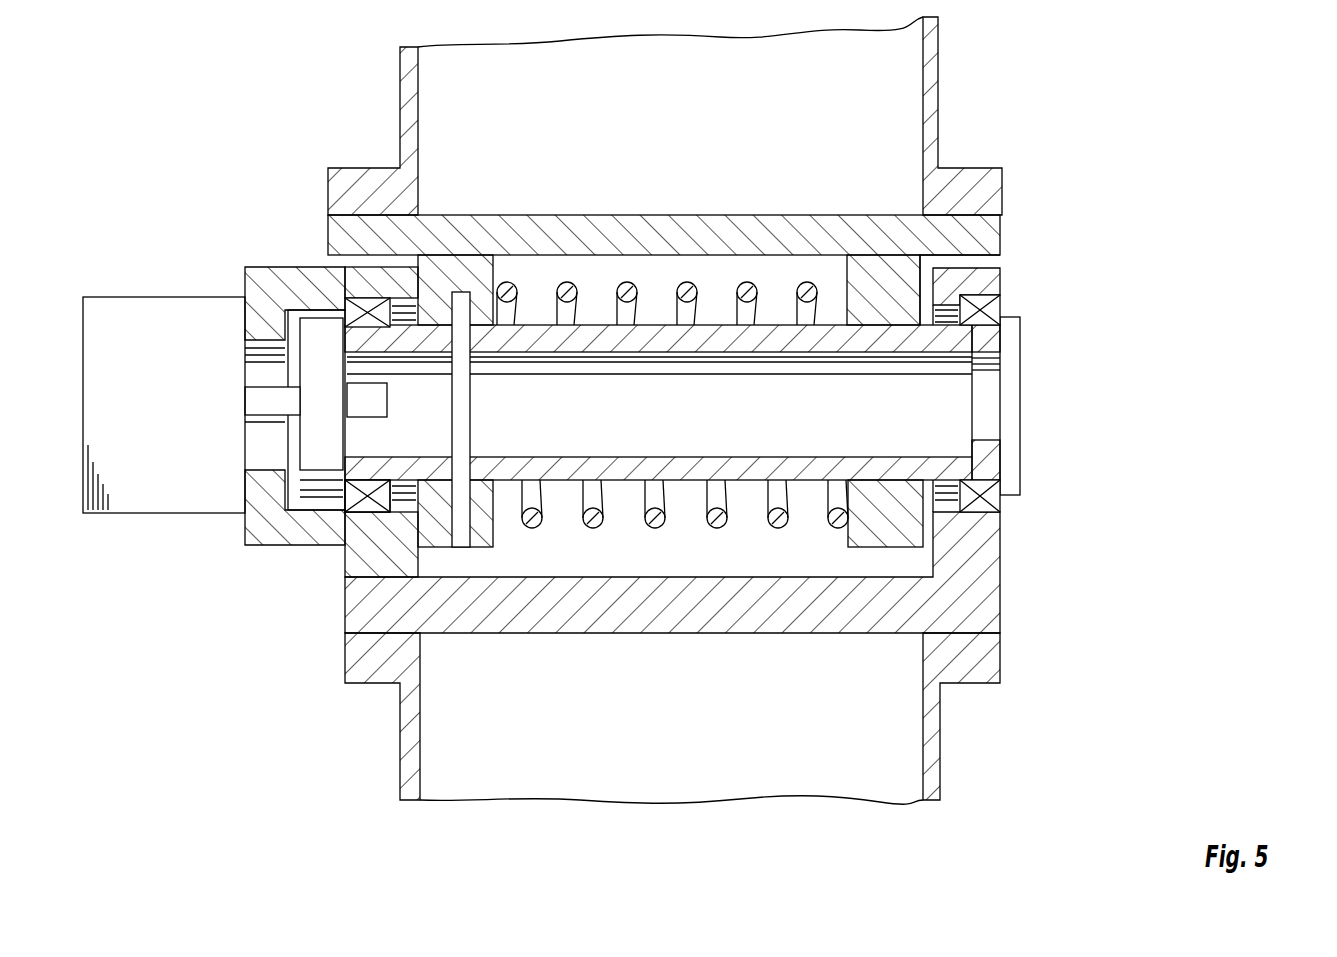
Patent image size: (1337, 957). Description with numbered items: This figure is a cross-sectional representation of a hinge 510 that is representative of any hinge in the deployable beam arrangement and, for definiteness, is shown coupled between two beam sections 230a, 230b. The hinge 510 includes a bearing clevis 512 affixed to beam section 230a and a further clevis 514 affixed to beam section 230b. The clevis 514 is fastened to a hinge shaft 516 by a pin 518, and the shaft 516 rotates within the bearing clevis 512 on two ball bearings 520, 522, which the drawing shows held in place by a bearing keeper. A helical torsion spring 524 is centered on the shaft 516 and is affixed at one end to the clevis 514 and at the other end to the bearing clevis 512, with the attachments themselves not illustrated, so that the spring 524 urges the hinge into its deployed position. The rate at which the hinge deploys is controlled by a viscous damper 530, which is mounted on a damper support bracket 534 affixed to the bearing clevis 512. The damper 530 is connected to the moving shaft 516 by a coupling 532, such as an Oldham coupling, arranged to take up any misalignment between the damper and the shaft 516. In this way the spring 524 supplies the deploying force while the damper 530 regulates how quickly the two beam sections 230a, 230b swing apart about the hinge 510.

The beam section 230b is at (938, 58).
The beam section 230a is at (938, 750).
The clevis 514 is at (1000, 226).
The bearing clevis 512 is at (410, 268).
The hinge shaft 516 is at (640, 485).
The pin 518 is at (470, 430).
The ball bearing 520 is at (1000, 505).
The ball bearing 522 is at (378, 514).
The helical torsion spring 524 is at (704, 290).
The viscous damper 530 is at (187, 400).
The coupling 532 is at (318, 308).
The damper support bracket 534 is at (245, 533).
The hinge 510 is at (1127, 727).
The bearing keeper is at (1020, 355).